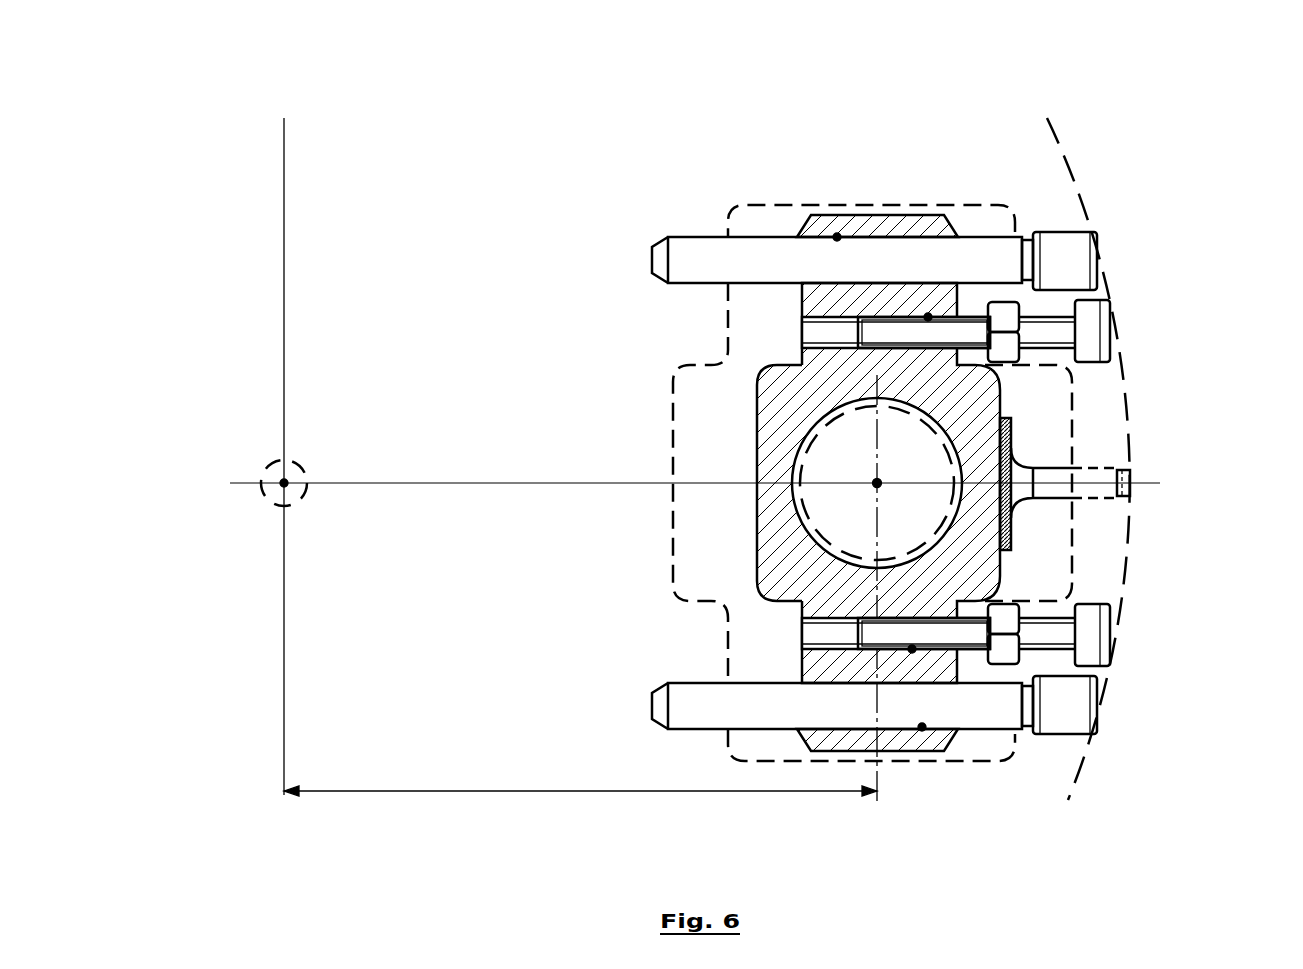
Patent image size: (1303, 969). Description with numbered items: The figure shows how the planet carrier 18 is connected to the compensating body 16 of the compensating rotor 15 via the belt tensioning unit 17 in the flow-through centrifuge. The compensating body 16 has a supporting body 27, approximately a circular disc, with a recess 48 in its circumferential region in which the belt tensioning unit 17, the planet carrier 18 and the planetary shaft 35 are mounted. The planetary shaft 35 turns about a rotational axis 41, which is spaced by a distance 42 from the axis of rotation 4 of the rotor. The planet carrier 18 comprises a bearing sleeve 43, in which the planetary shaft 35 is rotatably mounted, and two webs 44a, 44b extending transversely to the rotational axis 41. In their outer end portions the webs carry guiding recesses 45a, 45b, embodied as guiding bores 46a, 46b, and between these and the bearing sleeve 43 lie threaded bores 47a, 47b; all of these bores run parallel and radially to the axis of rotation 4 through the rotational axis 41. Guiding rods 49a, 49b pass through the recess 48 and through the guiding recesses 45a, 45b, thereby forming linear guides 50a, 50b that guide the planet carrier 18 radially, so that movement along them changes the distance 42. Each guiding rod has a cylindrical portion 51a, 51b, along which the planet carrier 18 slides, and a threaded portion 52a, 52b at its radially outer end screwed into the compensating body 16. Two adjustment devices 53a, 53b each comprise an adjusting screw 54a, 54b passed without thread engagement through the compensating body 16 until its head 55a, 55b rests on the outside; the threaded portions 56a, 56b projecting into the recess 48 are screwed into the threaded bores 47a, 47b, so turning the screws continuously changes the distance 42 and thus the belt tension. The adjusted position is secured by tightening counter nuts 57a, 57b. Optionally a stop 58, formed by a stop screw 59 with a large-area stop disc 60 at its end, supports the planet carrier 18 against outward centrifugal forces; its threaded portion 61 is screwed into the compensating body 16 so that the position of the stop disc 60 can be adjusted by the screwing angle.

The axis of rotation 4 is at (284, 485).
The compensating rotor 15 is at (448, 158).
The compensating body 16 is at (448, 158).
The supporting body 27 is at (487, 170).
The belt tensioning unit 17 is at (1090, 146).
The planet carrier 18 is at (775, 506).
The planetary shaft 35 is at (858, 465).
The rotational axis 41 is at (877, 483).
The distance 42 is at (440, 791).
The bearing sleeve 43 is at (802, 576).
The web 44a is at (892, 222).
The web 44b is at (922, 752).
The guiding recess 45a is at (857, 138).
The guiding bore 46a is at (837, 237).
The guiding recess 45b is at (914, 797).
The guiding bore 46b is at (922, 727).
The threaded bore 47a is at (928, 317).
The threaded bore 47b is at (912, 649).
The recess 48 is at (726, 420).
The guiding rod 49a is at (672, 255).
The guiding rod 49b is at (695, 700).
The linear guide 50a is at (730, 297).
The linear guide 50b is at (748, 741).
The cylindrical portion 51a is at (752, 268).
The cylindrical portion 51b is at (780, 702).
The threaded portion 52a is at (1070, 262).
The threaded portion 52b is at (1070, 706).
The adjustment device 53a is at (1175, 333).
The adjustment device 53b is at (1160, 633).
The adjusting screw 54a is at (1092, 386).
The adjusting screw 54b is at (1090, 582).
The head 55a is at (1045, 330).
The head 55b is at (1050, 636).
The threaded portion 56a is at (895, 335).
The threaded portion 56b is at (990, 634).
The counter nut 57a is at (1000, 325).
The counter nut 57b is at (1000, 648).
The stop 58 is at (1114, 468).
The stop screw 59 is at (1045, 460).
The stop disc 60 is at (1006, 442).
The threaded portion 61 is at (1086, 490).